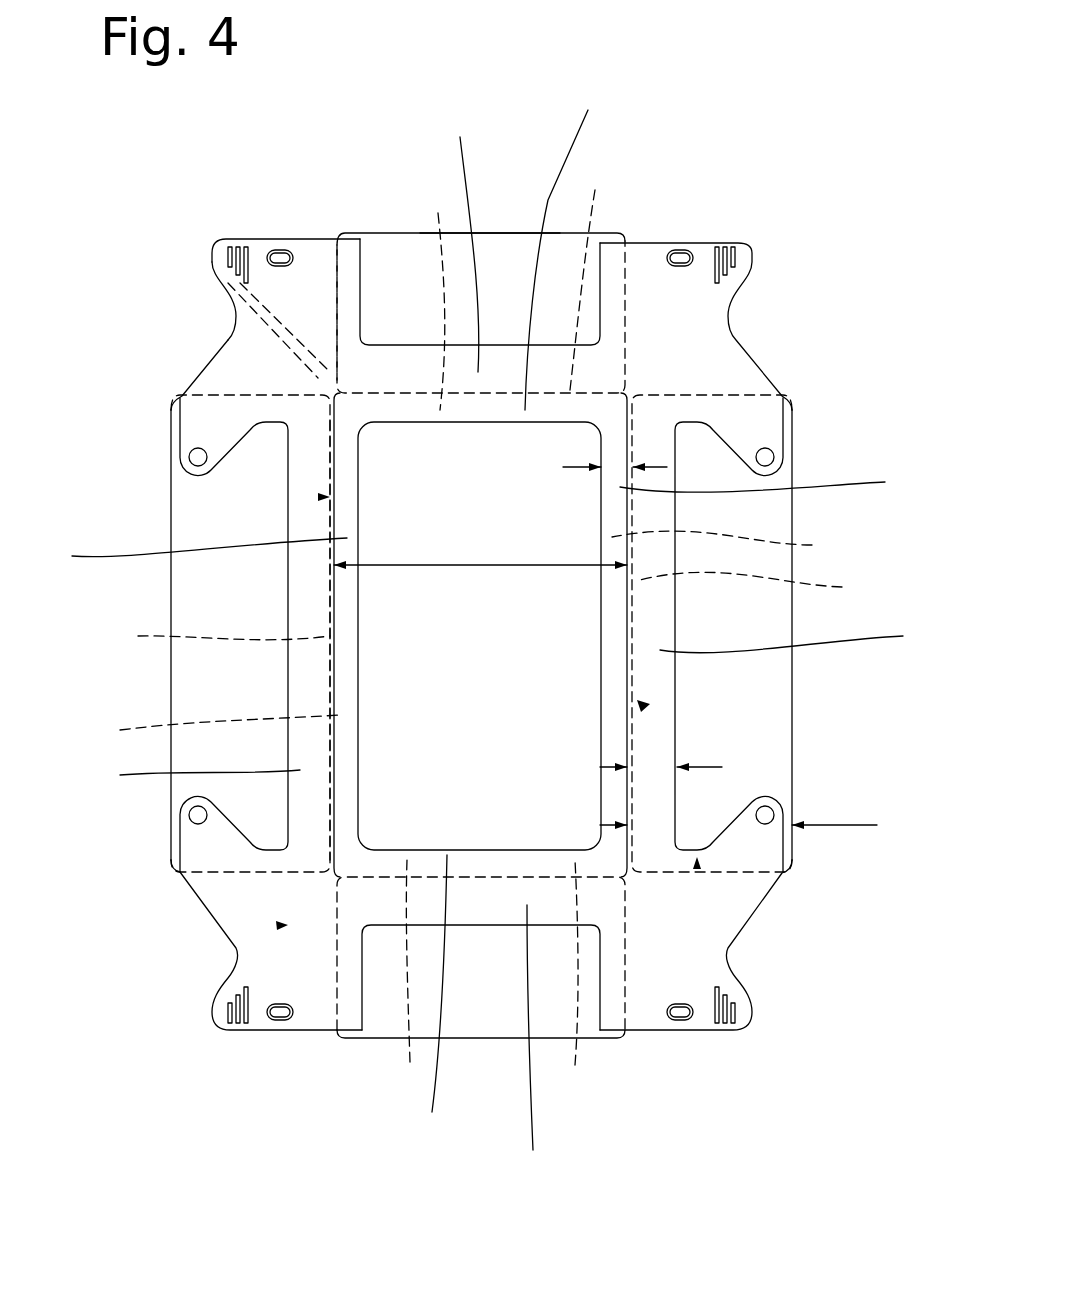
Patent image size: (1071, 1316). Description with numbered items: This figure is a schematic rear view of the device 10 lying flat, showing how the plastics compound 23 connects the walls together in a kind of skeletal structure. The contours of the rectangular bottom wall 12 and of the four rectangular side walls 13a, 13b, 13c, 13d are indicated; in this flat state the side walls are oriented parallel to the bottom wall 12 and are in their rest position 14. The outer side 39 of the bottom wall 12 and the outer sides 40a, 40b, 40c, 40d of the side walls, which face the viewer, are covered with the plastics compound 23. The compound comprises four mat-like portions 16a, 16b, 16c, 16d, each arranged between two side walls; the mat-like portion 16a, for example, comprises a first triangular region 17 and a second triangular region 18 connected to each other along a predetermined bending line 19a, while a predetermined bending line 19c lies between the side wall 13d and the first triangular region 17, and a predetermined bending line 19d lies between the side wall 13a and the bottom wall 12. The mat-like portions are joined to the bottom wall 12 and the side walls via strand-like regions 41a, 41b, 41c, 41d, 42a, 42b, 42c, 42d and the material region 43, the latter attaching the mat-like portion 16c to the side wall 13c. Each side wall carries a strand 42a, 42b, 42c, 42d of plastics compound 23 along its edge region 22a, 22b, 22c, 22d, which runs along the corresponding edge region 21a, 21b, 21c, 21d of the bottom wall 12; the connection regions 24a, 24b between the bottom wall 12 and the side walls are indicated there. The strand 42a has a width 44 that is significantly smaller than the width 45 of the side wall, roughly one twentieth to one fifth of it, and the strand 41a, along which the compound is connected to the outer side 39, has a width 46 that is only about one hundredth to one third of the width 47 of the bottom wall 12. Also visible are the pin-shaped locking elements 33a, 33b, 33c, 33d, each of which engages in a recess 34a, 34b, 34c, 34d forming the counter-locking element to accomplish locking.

The device 10 is at (757, 168).
The bottom wall 12 is at (420, 455).
The side wall 13a is at (205, 700).
The side wall 13b is at (483, 1020).
The side wall 13c is at (760, 665).
The side wall 13d is at (505, 248).
The rest position 14 is at (545, 138).
The mat-like portion 16a is at (282, 297).
The mat-like portion 16b is at (247, 912).
The mat-like portion 16c is at (720, 910).
The mat-like portion 16d is at (712, 362).
The first triangular region 17 is at (263, 300).
The second triangular region 18 is at (240, 368).
The predetermined bending line 19a is at (273, 338).
The predetermined bending line 19c is at (333, 262).
The predetermined bending line 19d is at (330, 595).
The edge region of bottom wall 21a is at (207, 729).
The edge region of bottom wall 21b is at (401, 979).
The edge region of bottom wall 21c is at (735, 537).
The edge region of bottom wall 21d is at (440, 297).
The edge region of side wall 22a is at (209, 640).
The edge region of side wall 22b is at (573, 979).
The edge region of side wall 22c is at (764, 579).
The edge region of side wall 22d is at (598, 275).
The plastics compound 23 is at (655, 620).
The connection region 24a is at (320, 497).
The connection region 24b is at (643, 707).
The locking element 33a is at (195, 460).
The locking element 33b is at (192, 820).
The locking element 33c is at (772, 815).
The locking element 33d is at (768, 455).
The recess 34a is at (292, 250).
The recess 34b is at (290, 1022).
The recess 34c is at (676, 1020).
The recess 34d is at (680, 250).
The outer side of bottom wall 39 is at (513, 626).
The outer side of side wall 40a is at (257, 561).
The outer side of side wall 40b is at (512, 988).
The outer side of side wall 40c is at (762, 708).
The outer side of side wall 40d is at (531, 316).
The strand 41a is at (776, 479).
The strand 41b is at (436, 1000).
The strand 41c is at (186, 553).
The strand 41d is at (577, 245).
The strand 42a is at (805, 636).
The strand 42b is at (528, 1047).
The strand 42c is at (187, 775).
The strand 42d is at (458, 240).
The material region 43 is at (697, 866).
The width of strand 44 is at (706, 767).
The width of side wall 45 is at (858, 825).
The width of strand 46 is at (657, 467).
The width of bottom wall 47 is at (452, 565).